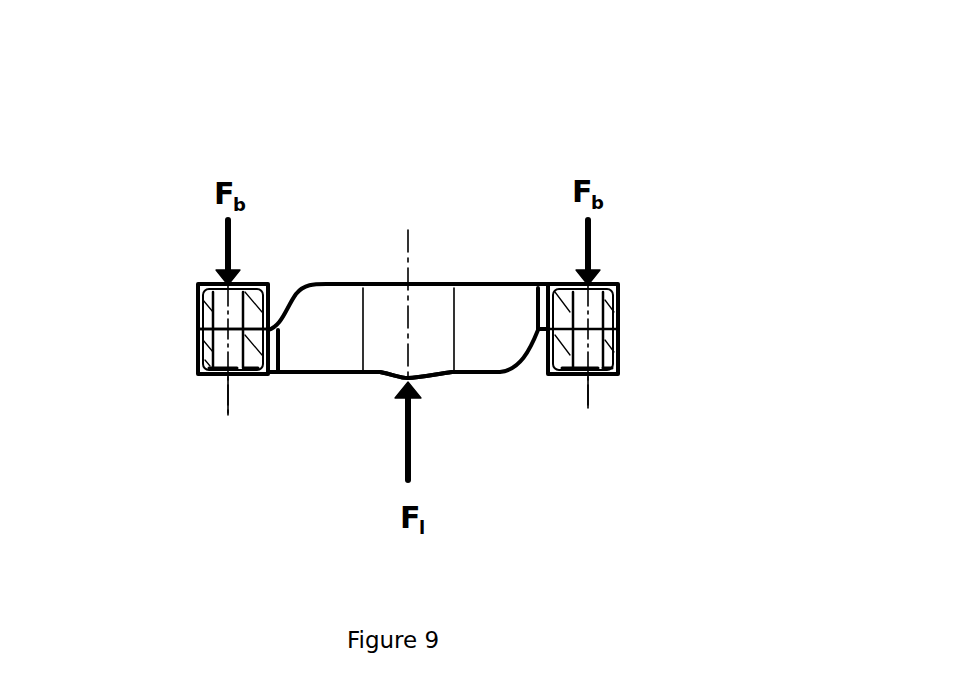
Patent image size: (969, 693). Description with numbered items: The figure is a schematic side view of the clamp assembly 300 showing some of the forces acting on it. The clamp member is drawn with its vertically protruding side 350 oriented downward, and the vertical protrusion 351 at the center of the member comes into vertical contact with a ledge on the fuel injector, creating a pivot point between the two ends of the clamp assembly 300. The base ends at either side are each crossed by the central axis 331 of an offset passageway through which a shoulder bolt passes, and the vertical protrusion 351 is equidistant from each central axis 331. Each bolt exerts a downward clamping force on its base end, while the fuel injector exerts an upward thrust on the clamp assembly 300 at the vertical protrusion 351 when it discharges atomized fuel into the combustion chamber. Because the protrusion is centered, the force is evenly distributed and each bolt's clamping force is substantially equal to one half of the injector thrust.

The clamp assembly 300 is at (757, 141).
The central axis of the offset passageway 331 is at (228, 410).
The vertically protruding side 350 is at (447, 402).
The vertical protrusion 351 is at (392, 384).